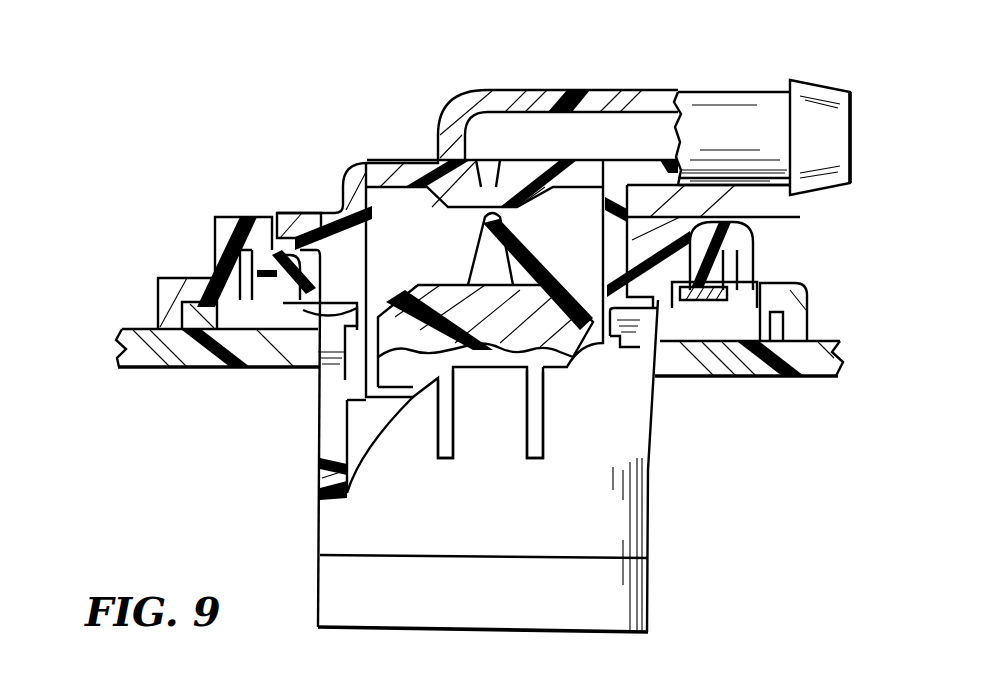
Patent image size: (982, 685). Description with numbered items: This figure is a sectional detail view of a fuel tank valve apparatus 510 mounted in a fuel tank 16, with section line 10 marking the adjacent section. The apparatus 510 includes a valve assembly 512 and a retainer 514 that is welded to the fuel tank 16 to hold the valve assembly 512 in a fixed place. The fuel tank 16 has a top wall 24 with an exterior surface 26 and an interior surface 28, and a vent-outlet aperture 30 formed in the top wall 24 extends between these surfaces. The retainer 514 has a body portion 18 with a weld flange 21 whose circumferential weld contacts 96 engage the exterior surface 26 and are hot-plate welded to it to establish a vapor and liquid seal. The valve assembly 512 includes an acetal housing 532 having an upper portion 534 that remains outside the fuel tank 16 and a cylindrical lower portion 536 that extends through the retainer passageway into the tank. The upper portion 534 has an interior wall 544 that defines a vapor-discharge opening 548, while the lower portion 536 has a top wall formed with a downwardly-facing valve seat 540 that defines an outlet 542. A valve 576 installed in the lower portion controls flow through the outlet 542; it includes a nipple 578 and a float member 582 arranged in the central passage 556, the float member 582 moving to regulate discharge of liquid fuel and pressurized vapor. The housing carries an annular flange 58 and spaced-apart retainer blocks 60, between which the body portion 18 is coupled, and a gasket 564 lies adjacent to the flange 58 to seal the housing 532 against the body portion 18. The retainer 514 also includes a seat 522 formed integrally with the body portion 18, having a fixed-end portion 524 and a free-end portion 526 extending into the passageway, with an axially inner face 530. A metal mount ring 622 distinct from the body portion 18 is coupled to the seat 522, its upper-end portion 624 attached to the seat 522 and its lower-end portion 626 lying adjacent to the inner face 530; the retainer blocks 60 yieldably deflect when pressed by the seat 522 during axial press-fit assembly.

The section line 10- 10 is at (85, 265).
The fuel tank 16 is at (141, 371).
The body portion 18 is at (214, 245).
The weld flange 21 is at (185, 280).
The top wall 24 is at (718, 364).
The exterior surface 26 is at (148, 324).
The interior surface 28 is at (176, 370).
The vent-outlet aperture 30 is at (667, 370).
The annular flange 58 is at (301, 213).
The retainer blocks 60 is at (630, 340).
The weld contacts 96 is at (226, 370).
The fuel tank valve apparatus 510 is at (381, 101).
The valve assembly 512 is at (655, 80).
The retainer 514 is at (203, 222).
The seat 522 is at (283, 320).
The fixed-end portion 524 is at (273, 260).
The free-end portion 526 is at (358, 310).
The axially inner face 530 is at (296, 305).
The housing 532 is at (298, 212).
The upper portion 534 is at (512, 90).
The lower portion 536 is at (408, 160).
The valve seat 540 is at (503, 218).
The outlet 542 is at (488, 165).
The interior wall 544 is at (600, 116).
The vapor-discharge opening 548 is at (645, 138).
The central passage 556 is at (381, 231).
The gasket 564 is at (322, 225).
The valve 576 is at (501, 354).
The nipple 578 is at (512, 244).
The float member 582 is at (446, 285).
The mount ring 622 is at (242, 257).
The upper-end portion 624 is at (205, 240).
The lower-end portion 626 is at (670, 312).